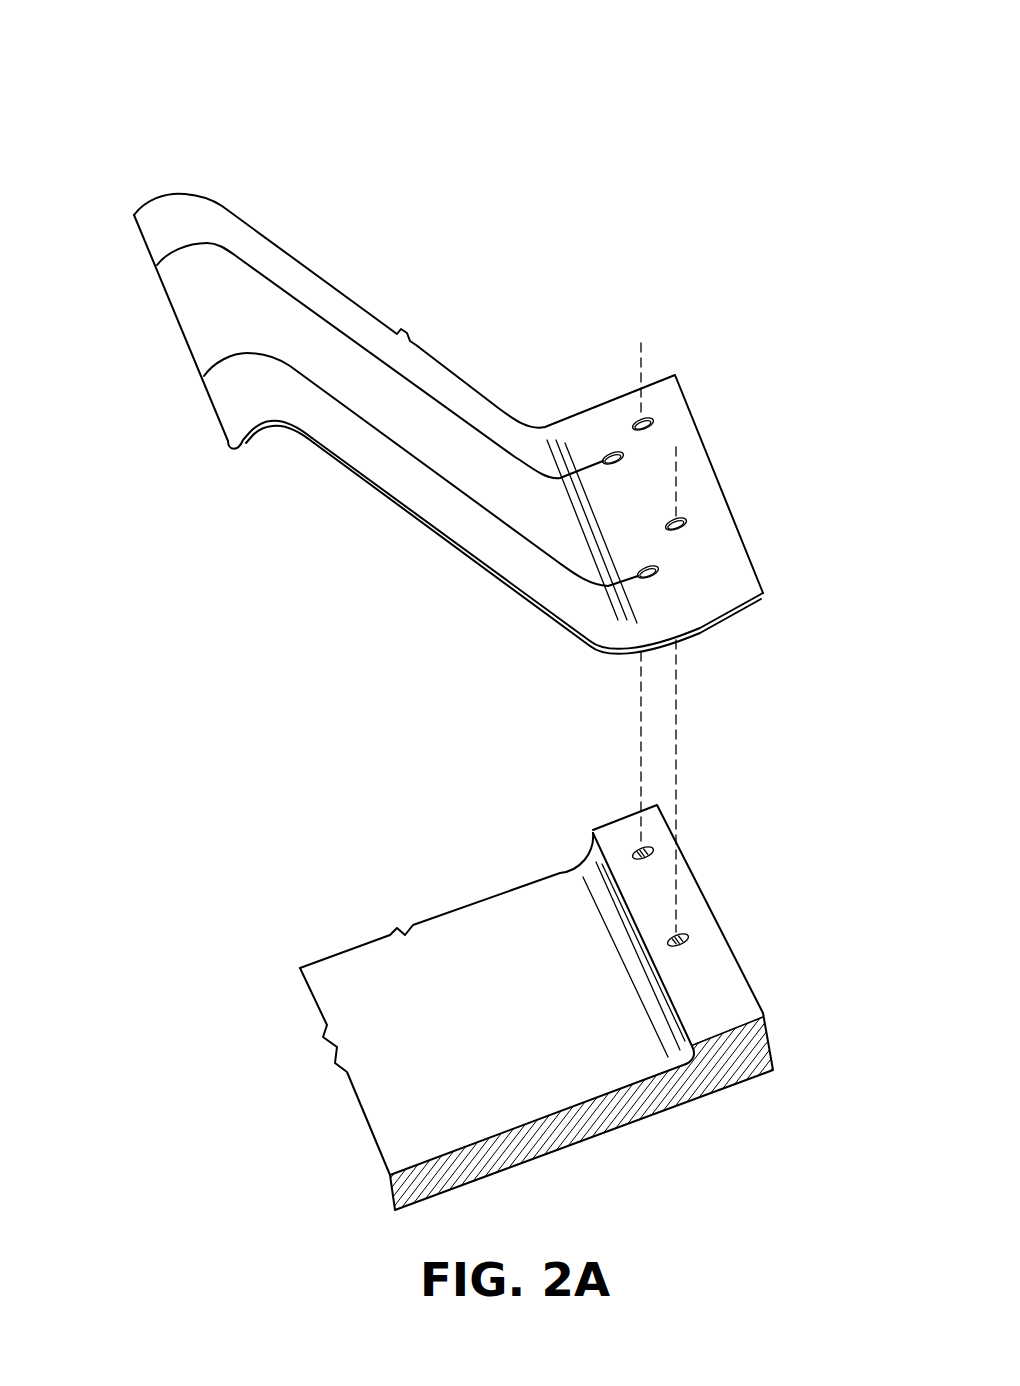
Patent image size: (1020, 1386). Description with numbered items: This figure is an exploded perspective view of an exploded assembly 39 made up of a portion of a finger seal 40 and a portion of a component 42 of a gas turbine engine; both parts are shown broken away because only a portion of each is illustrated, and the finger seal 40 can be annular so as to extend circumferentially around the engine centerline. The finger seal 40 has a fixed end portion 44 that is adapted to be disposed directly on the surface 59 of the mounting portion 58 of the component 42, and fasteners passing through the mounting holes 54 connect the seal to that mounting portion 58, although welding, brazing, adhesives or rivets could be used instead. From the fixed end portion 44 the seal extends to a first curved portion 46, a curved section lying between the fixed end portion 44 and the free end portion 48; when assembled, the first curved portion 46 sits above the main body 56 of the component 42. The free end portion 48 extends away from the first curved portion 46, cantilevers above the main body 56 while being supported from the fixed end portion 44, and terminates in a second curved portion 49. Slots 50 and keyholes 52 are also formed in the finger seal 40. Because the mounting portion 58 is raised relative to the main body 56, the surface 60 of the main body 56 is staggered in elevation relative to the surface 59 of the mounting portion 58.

The exploded assembly 39 is at (89, 100).
The finger seal 40 is at (112, 221).
The component 42 is at (720, 1120).
The fixed end portion 44 is at (691, 464).
The first curved portion 46 is at (559, 443).
The free end portion 48 is at (345, 352).
The second curved portion 49 is at (276, 386).
The slots 50 is at (488, 436).
The keyholes 52 is at (622, 455).
The mounting holes 54 is at (645, 418).
The main body 56 is at (594, 1124).
The mounting portion 58 is at (740, 1053).
The surface 59 is at (687, 913).
The surface 60 is at (395, 1118).